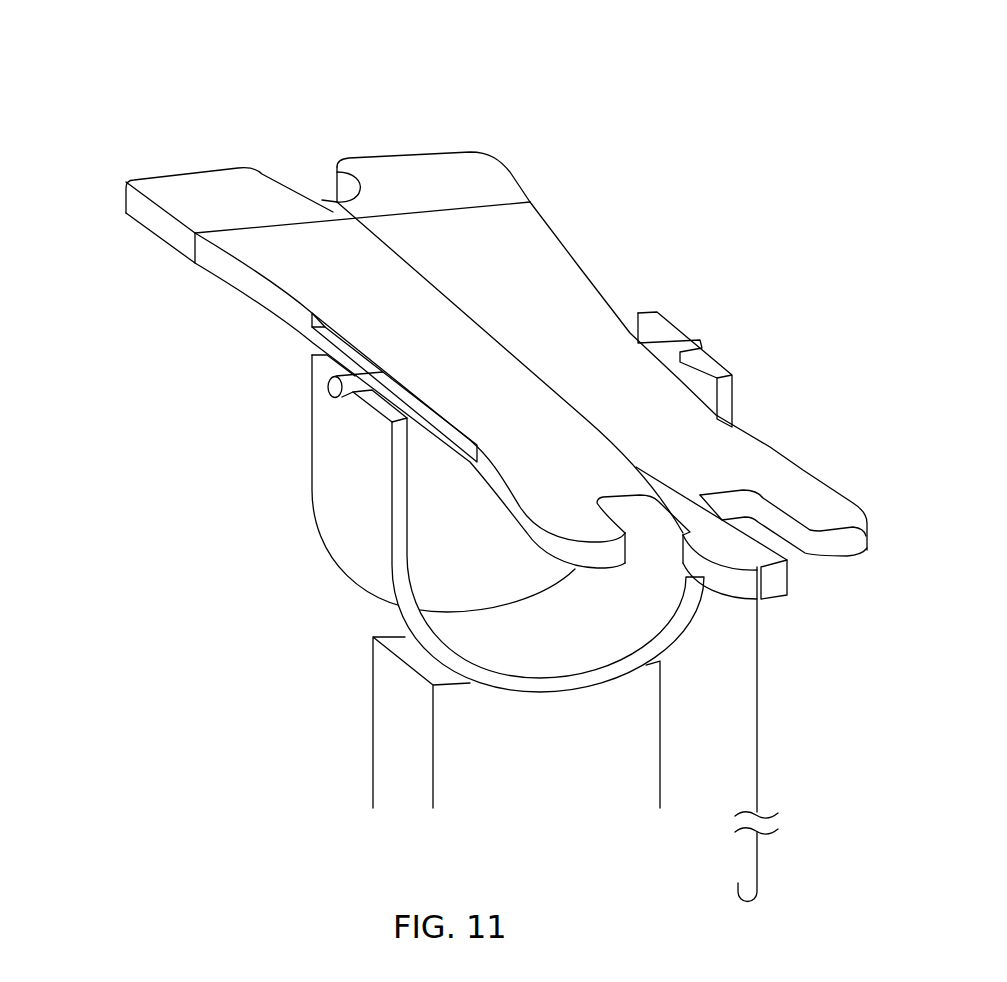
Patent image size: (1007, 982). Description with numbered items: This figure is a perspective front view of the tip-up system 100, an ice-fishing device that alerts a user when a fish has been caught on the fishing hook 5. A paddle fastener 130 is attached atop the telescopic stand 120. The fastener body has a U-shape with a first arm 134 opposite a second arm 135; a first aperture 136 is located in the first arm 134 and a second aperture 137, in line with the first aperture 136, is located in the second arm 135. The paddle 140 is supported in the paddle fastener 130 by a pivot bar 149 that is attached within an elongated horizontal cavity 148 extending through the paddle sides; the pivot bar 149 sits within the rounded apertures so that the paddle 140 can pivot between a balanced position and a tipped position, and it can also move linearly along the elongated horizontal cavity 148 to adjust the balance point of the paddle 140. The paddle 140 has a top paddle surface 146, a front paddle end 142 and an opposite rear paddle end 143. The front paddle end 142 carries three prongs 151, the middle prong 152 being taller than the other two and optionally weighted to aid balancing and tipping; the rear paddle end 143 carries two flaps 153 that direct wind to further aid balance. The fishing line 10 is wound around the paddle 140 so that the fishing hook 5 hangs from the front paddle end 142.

The tip-up system 100 is at (725, 87).
The fishing line 10 is at (460, 302).
The paddle 140 is at (603, 233).
The flaps 153 is at (232, 197).
The rear paddle end 143 is at (322, 200).
The elongated horizontal cavity 148 is at (247, 287).
The top paddle surface 146 is at (320, 262).
The prongs 151 is at (590, 548).
The front paddle end 142 is at (767, 598).
The middle prong 152 is at (780, 587).
The pivot bar 149 is at (400, 600).
The second arm 135 is at (718, 363).
The second aperture 137 is at (678, 342).
The paddle fastener 130 is at (325, 460).
The first arm 134 is at (357, 500).
The first aperture 136 is at (312, 355).
The telescopic stand 120 is at (400, 758).
The fishing hook 5 is at (757, 867).